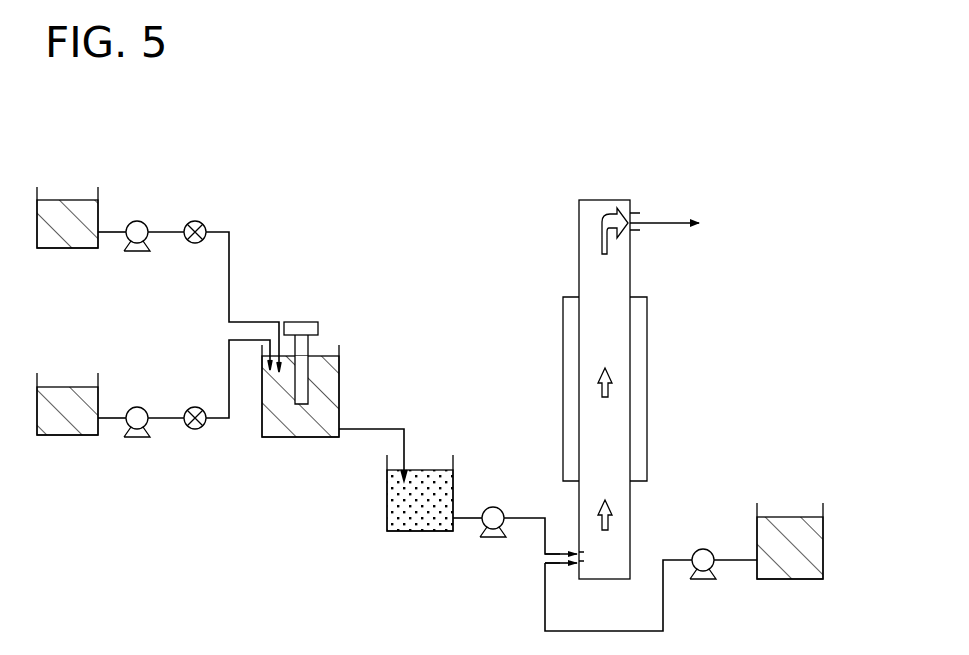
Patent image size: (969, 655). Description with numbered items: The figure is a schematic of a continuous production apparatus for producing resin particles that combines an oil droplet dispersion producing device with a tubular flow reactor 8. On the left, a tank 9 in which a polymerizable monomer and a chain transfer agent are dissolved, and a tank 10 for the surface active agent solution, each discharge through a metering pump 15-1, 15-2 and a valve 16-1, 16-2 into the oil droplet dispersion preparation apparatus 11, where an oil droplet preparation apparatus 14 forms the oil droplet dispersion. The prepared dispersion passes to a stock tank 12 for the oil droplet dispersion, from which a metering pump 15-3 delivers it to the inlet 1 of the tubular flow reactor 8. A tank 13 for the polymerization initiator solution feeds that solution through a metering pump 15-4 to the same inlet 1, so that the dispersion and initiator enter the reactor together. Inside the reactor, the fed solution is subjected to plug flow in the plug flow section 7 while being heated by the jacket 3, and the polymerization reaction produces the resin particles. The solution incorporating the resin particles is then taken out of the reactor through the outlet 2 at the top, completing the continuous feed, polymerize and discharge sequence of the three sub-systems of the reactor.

The inlet 1 is at (574, 568).
The outlet 2 is at (663, 222).
The jacket 3 is at (648, 323).
The plug flow section 7 is at (587, 341).
The tubular flow reactor 8 is at (623, 389).
The tank in which a polymerizable monomer and a chain transfer agent are dissolved 9 is at (62, 192).
The tank for the surface active agent solution 10 is at (62, 375).
The oil droplet dispersion preparation apparatus 11 is at (324, 347).
The stock tank for the oil droplet dispersion 12 is at (425, 456).
The tank for the polymerization initiator solution 13 is at (783, 503).
The oil droplet preparation apparatus 14 is at (299, 320).
The metering pump 15-1 is at (134, 220).
The metering pump 15-2 is at (134, 406).
The metering pump 15-3 is at (493, 506).
The metering pump 15-4 is at (701, 548).
The valve 16-1 is at (196, 220).
The valve 16-2 is at (196, 406).